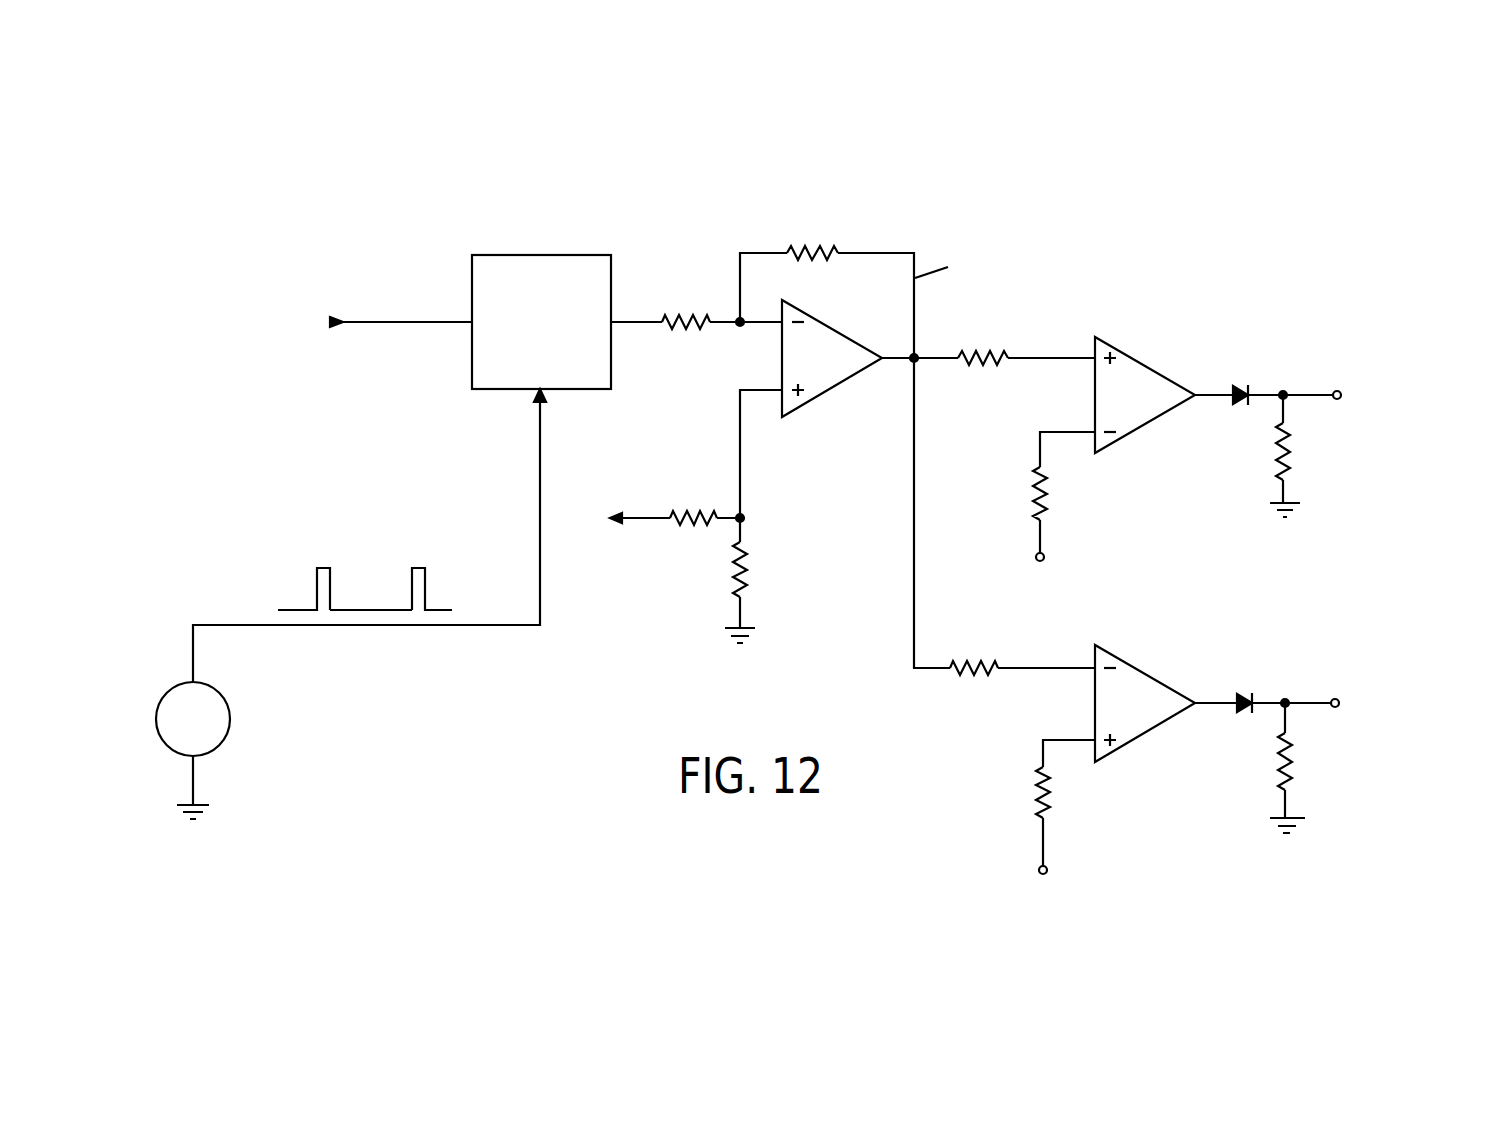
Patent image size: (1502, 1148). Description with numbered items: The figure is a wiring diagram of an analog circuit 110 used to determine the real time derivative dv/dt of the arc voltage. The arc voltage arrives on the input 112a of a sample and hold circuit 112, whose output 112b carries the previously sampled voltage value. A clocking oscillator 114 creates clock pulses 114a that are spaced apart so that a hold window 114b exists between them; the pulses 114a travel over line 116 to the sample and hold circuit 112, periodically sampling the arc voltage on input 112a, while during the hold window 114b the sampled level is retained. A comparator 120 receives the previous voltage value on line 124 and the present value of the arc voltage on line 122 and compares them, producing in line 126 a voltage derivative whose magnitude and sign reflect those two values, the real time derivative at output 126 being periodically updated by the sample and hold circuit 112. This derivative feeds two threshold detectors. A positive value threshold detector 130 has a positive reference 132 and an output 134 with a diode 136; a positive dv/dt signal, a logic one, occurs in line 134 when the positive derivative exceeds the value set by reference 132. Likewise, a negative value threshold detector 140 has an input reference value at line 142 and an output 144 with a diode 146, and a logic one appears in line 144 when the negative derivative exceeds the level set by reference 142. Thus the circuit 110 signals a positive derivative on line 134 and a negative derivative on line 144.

The analog circuit 110 is at (895, 190).
The sample and hold circuit 112 is at (528, 253).
The input 112a is at (386, 318).
The output 112b is at (638, 320).
The clocking oscillator 114 is at (228, 705).
The clock pulses 114a is at (322, 567).
The hold window 114b is at (362, 608).
The line 116 is at (540, 445).
The comparator 120 is at (837, 387).
The line 122 is at (740, 448).
The line 124 is at (758, 325).
The line 126 is at (917, 353).
The positive value threshold detector 130 is at (1135, 355).
The positive reference 132 is at (1045, 535).
The output 134 is at (1268, 388).
The diode 136 is at (1242, 388).
The negative value threshold detector 140 is at (1133, 663).
The input reference value 142 is at (1045, 847).
The output 144 is at (1265, 698).
The diode 146 is at (1243, 697).